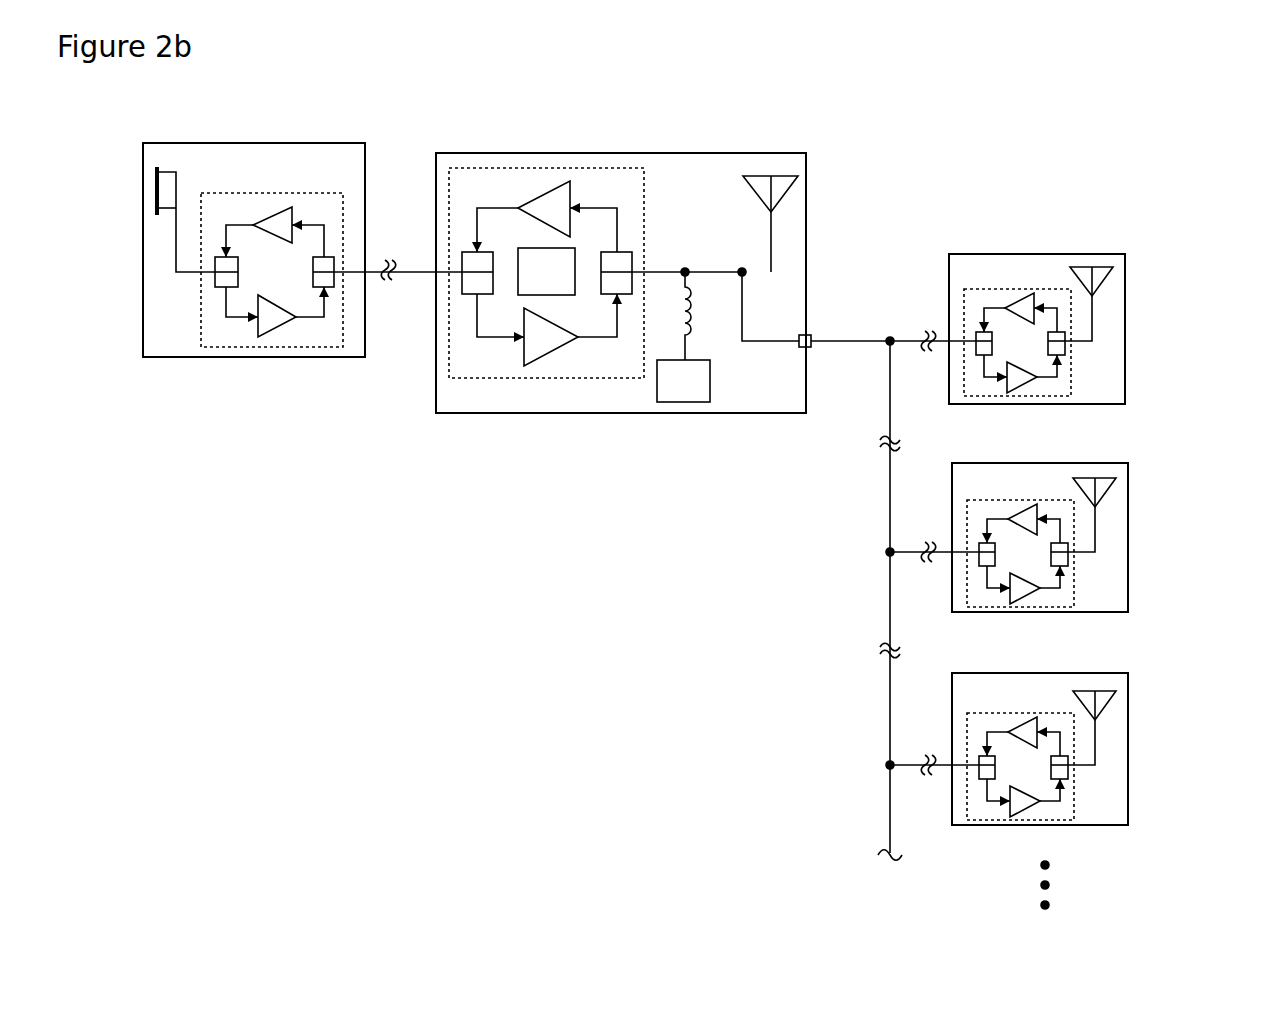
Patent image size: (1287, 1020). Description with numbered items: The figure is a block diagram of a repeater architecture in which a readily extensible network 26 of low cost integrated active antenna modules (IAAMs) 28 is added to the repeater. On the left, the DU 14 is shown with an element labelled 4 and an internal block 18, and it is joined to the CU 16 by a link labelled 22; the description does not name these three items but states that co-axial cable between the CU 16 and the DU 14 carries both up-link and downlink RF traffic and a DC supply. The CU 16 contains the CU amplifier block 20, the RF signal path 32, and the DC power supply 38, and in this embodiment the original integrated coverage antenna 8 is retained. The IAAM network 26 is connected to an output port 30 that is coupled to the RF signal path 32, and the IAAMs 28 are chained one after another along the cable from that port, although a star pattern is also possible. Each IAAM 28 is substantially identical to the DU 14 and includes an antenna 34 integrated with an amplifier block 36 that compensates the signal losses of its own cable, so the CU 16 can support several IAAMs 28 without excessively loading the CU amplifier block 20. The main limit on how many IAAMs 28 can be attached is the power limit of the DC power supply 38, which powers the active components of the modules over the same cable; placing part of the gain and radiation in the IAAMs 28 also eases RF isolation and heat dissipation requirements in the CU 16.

The handset / terminal interface 4 is at (176, 182).
The integrated coverage antenna 8 is at (787, 195).
The DU 14 is at (243, 153).
The CU 16 is at (712, 153).
The bidirectional amplifier of terminal unit 18 is at (267, 193).
The CU amplifier block 20 is at (644, 200).
The transmission cable 22 is at (377, 266).
The IAAM network 26 is at (1188, 184).
The integrated active antenna module 28 is at (1126, 309).
The output port 30 is at (814, 332).
The RF signal path 32 is at (720, 272).
The antenna 34 is at (1107, 266).
The amplifier block 36 is at (1005, 289).
The DC power supply 38 is at (710, 381).